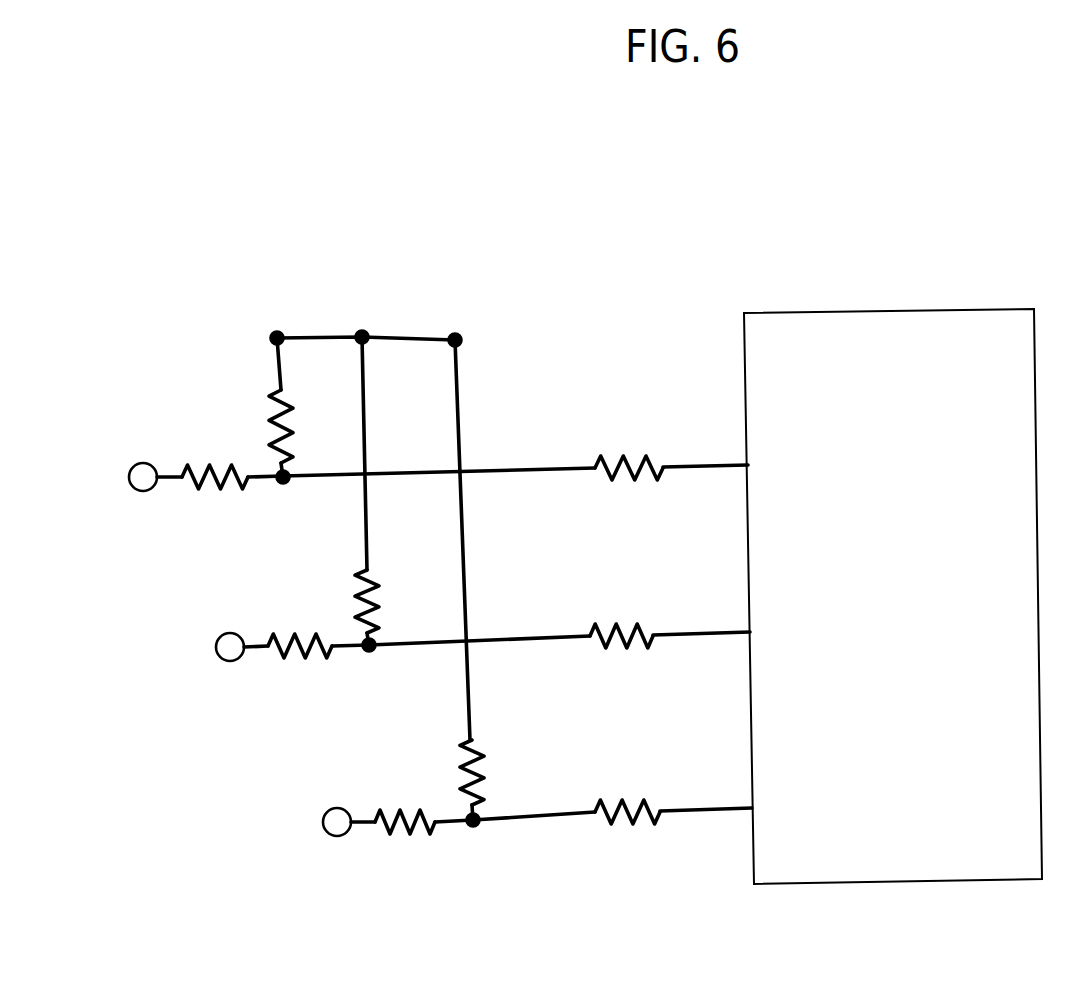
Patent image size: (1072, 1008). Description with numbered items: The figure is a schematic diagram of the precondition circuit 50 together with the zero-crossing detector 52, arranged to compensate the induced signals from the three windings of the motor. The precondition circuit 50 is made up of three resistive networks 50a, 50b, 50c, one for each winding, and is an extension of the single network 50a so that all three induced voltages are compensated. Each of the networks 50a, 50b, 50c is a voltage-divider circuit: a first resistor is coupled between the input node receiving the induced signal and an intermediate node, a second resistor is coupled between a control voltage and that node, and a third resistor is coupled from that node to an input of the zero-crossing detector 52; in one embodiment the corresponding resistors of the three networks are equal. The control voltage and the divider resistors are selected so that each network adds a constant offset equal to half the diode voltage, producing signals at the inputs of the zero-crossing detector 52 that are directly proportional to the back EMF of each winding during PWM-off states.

The precondition circuit 50 is at (409, 503).
The network 50a is at (219, 407).
The network 50b is at (305, 586).
The network 50c is at (397, 768).
The zero-crossing detector 52 is at (893, 533).